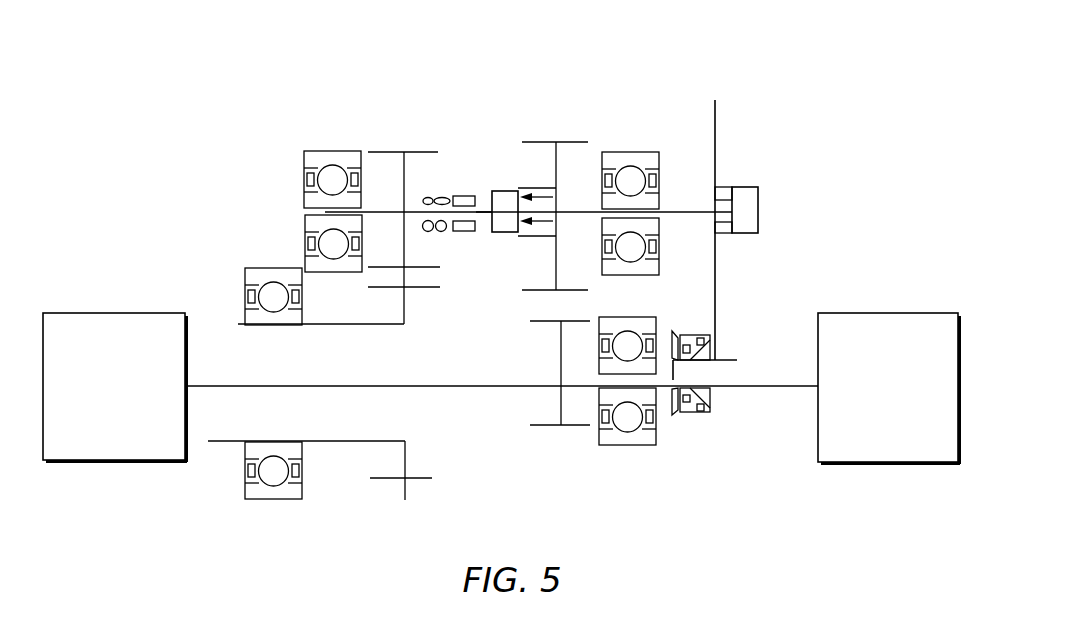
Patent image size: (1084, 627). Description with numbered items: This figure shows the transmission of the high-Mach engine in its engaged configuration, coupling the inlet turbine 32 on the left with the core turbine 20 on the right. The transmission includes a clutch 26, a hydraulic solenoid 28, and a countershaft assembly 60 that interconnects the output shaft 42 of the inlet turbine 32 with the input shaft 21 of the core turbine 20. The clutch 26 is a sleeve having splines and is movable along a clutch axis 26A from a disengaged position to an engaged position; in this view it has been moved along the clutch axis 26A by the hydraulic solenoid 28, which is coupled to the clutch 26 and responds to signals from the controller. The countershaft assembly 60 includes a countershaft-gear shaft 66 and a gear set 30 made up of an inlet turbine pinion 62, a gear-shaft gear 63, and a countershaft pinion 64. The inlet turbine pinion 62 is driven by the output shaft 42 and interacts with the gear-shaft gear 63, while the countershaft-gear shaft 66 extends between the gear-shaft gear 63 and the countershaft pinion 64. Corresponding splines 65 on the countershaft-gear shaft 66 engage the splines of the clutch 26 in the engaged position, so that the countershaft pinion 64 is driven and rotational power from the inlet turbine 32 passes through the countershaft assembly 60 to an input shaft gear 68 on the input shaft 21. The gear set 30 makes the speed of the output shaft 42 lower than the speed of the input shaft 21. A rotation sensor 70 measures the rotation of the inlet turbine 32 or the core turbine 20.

The core turbine 20 is at (895, 325).
The input shaft 21 is at (713, 337).
The clutch 26 is at (505, 200).
The clutch axis 26A is at (484, 207).
The hydraulic solenoid 28 is at (745, 210).
The gear set 30 is at (378, 128).
The inlet turbine 32 is at (118, 323).
The output shaft 42 is at (258, 270).
The countershaft assembly 60 is at (322, 179).
The inlet turbine pinion 62 is at (405, 480).
The gear-shaft gear 63 is at (404, 152).
The countershaft pinion 64 is at (580, 141).
The corresponding splines 65 is at (428, 196).
The countershaft-gear shaft 66 is at (445, 182).
The input shaft gear 68 is at (561, 427).
The rotation sensor 70 is at (233, 500).